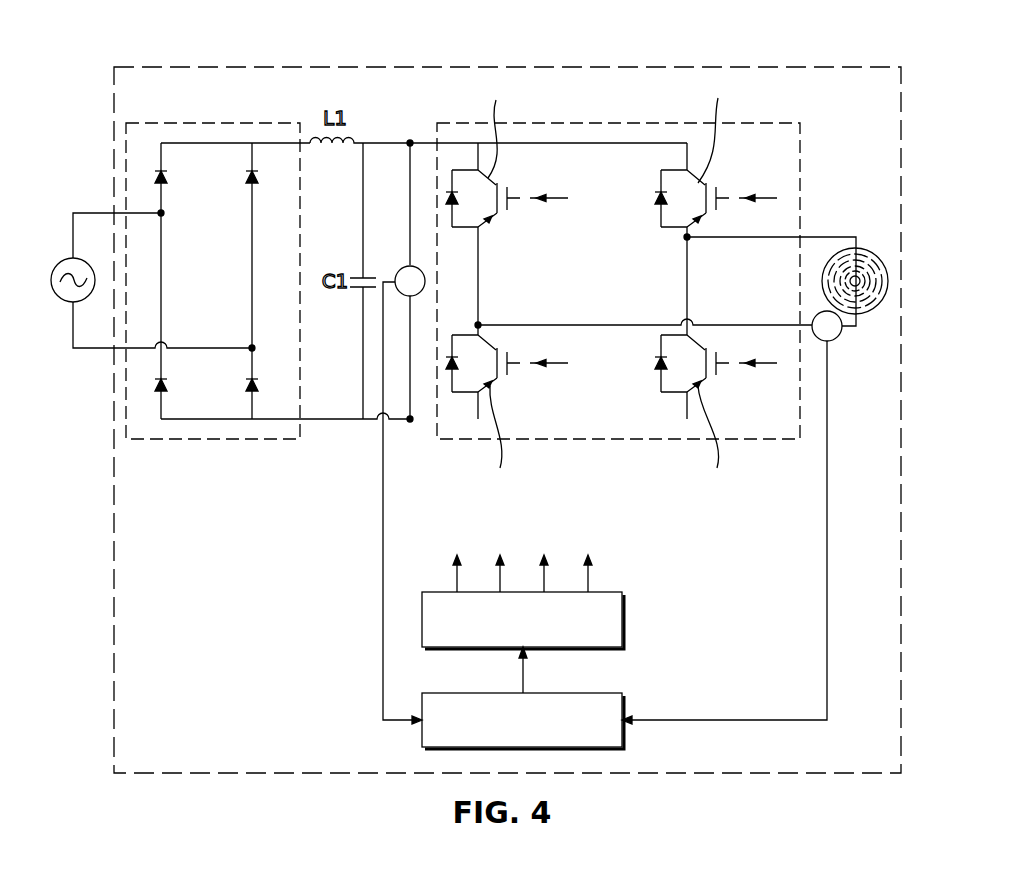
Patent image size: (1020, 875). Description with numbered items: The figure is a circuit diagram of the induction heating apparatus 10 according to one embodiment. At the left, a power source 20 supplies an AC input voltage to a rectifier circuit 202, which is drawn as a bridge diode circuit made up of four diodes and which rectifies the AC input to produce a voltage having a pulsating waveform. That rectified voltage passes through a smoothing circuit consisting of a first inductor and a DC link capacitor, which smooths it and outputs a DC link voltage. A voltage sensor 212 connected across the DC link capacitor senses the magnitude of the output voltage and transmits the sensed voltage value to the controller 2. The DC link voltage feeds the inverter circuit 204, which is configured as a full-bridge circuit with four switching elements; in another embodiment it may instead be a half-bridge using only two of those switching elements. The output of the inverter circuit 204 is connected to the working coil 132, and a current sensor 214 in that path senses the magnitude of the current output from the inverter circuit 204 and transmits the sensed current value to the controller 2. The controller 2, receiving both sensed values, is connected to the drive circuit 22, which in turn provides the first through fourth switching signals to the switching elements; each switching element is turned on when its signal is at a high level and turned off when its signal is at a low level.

The induction heating apparatus 10 is at (843, 67).
The power source 20 is at (69, 258).
The rectifier circuit 202 is at (185, 123).
The inverter circuit 204 is at (611, 123).
The voltage sensor 212 is at (403, 267).
The current sensor 214 is at (840, 338).
The working coil 132 is at (863, 248).
The drive circuit 22 is at (622, 618).
The controller 2 is at (601, 693).